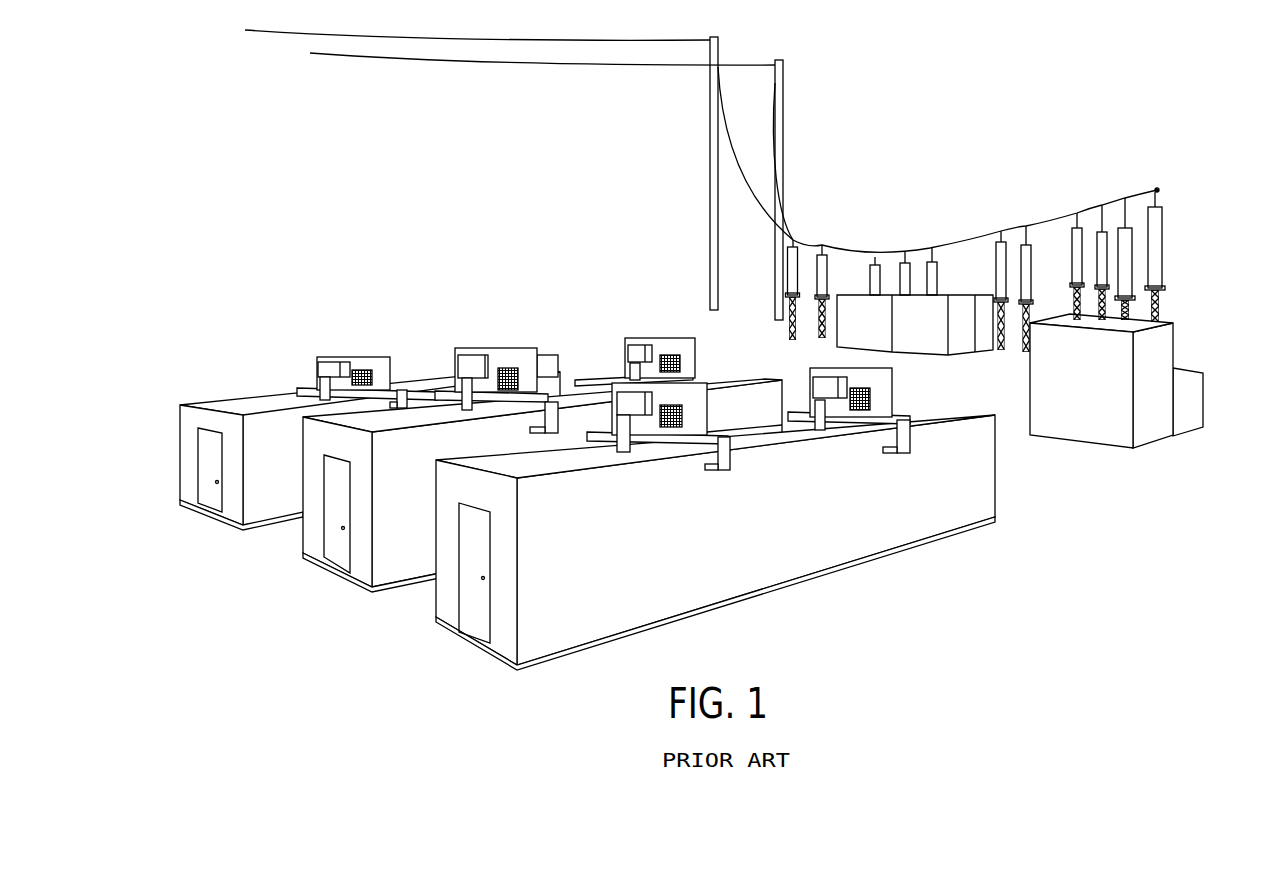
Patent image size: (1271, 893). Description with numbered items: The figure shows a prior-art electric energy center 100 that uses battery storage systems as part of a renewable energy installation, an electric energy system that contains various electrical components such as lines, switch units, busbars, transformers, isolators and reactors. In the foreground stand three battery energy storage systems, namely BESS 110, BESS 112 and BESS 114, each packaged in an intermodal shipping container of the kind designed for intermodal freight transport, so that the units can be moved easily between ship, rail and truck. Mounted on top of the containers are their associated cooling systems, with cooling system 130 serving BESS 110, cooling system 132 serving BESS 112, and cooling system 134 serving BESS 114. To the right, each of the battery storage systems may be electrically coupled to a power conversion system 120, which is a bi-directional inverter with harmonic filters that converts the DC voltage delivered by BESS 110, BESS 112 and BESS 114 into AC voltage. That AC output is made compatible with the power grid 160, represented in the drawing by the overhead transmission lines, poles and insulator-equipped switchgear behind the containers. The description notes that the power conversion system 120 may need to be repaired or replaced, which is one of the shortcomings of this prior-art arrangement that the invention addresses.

The electric energy center 100 is at (167, 285).
The battery energy storage system 110 is at (458, 632).
The battery energy storage system 112 is at (327, 568).
The battery energy storage system 114 is at (202, 512).
The power conversion system 120 is at (1148, 437).
The cooling system 130 is at (713, 413).
The cooling system 132 is at (497, 350).
The cooling system 134 is at (338, 355).
The power grid 160 is at (905, 253).